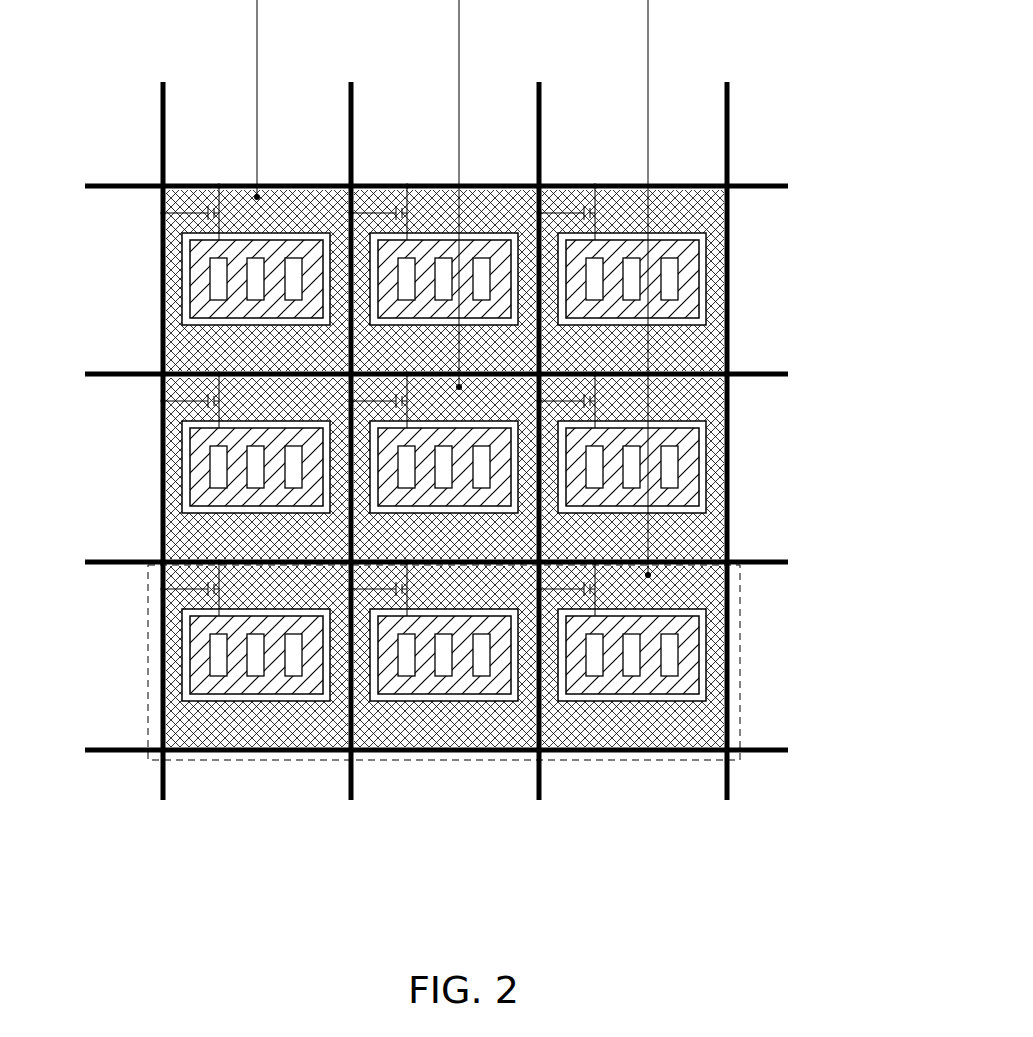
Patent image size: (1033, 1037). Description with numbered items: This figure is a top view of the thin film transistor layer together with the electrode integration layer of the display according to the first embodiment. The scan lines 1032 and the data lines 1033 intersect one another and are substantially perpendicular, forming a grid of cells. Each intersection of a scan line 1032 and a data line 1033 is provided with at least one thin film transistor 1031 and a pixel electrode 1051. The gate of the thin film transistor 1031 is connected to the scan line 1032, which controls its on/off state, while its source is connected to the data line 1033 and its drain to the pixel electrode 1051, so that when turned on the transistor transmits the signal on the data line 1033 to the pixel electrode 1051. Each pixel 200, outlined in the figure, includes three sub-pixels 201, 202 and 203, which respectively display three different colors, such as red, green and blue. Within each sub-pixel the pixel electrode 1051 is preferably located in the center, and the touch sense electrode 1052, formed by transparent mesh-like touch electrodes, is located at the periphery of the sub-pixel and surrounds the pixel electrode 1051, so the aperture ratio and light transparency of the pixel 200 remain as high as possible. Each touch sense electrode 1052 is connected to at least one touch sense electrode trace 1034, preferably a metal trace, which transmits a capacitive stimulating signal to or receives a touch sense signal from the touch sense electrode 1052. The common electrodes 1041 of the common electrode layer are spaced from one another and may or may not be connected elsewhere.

The pixel 200 is at (148, 661).
The sub-pixel 201 is at (263, 713).
The sub-pixel 202 is at (449, 714).
The sub-pixel 203 is at (634, 713).
The thin film transistor 1031 is at (207, 212).
The scan line 1032 is at (163, 112).
The data line 1033 is at (92, 186).
The touch sense electrode trace 1034 is at (257, 22).
The common electrode 1041 is at (672, 275).
The pixel electrode 1051 is at (672, 312).
The touch sense electrode 1052 is at (729, 213).